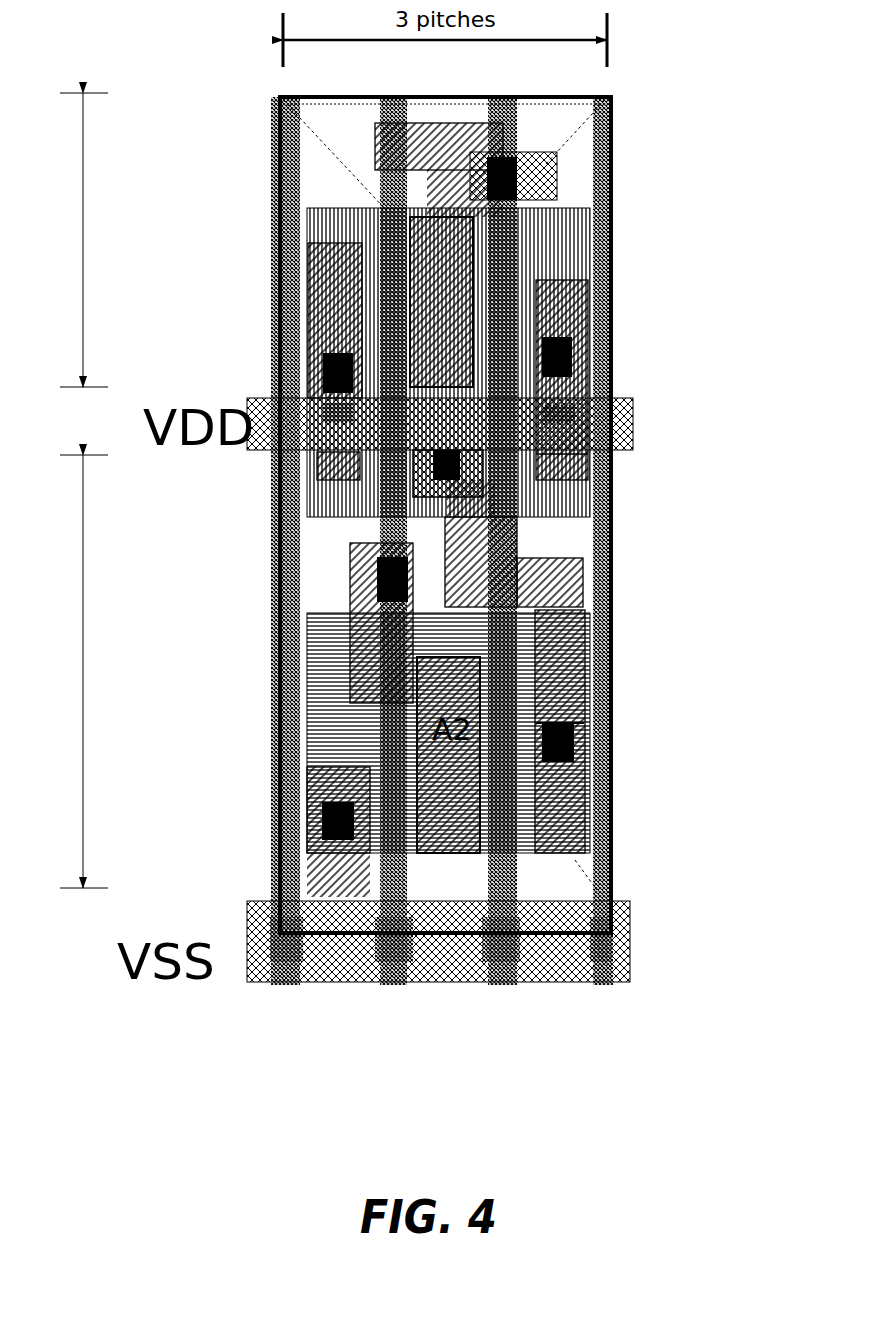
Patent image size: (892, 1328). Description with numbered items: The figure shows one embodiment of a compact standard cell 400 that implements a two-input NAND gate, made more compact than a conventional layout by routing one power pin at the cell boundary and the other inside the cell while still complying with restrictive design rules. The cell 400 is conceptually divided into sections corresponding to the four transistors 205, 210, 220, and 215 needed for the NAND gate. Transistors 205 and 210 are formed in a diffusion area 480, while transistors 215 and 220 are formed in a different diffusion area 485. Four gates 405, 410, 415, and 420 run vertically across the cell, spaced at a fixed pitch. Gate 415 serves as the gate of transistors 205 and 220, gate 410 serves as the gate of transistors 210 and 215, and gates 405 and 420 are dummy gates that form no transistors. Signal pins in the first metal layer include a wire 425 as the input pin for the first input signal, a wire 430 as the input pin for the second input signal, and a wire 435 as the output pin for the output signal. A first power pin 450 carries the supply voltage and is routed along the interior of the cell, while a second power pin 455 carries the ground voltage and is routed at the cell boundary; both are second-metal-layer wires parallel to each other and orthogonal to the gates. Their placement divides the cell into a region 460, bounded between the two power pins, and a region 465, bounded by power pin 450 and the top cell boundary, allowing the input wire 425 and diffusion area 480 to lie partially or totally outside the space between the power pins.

The compact standard cell 400 is at (612, 113).
The dummy gate 405 is at (597, 880).
The gate 410 is at (498, 880).
The gate 415 is at (385, 880).
The dummy gate 420 is at (273, 880).
The wire (input pin A1) 425 is at (433, 313).
The wire (input pin A2) 430 is at (350, 688).
The wire (output pin X) 435 is at (575, 670).
The first power pin (VDD) 450 is at (638, 428).
The second power pin (VSS) 455 is at (636, 935).
The region between power pins 460 is at (79, 671).
The region outside power pins 465 is at (79, 240).
The diffusion area 480 is at (537, 262).
The diffusion area 485 is at (323, 638).
The transistor 205 is at (370, 320).
The transistor 210 is at (520, 321).
The transistor 215 is at (520, 762).
The transistor 220 is at (367, 733).